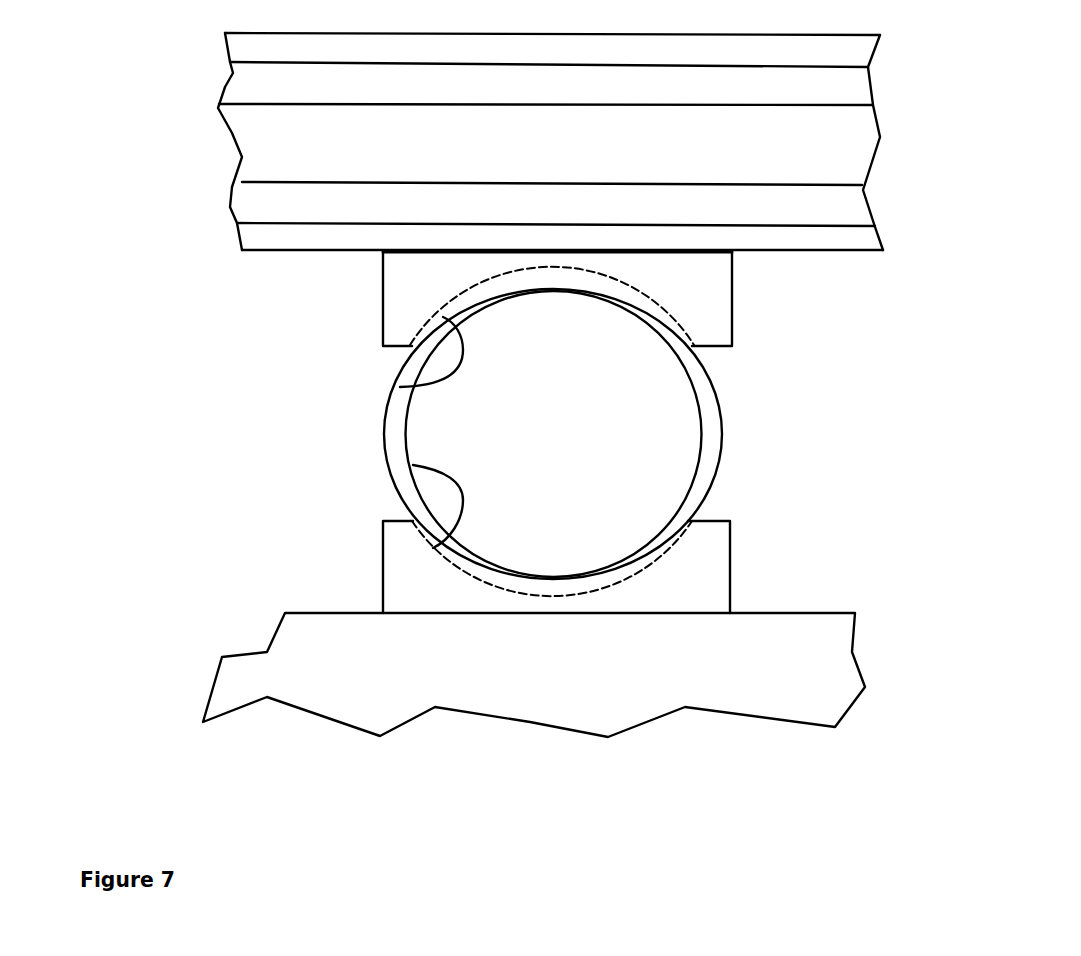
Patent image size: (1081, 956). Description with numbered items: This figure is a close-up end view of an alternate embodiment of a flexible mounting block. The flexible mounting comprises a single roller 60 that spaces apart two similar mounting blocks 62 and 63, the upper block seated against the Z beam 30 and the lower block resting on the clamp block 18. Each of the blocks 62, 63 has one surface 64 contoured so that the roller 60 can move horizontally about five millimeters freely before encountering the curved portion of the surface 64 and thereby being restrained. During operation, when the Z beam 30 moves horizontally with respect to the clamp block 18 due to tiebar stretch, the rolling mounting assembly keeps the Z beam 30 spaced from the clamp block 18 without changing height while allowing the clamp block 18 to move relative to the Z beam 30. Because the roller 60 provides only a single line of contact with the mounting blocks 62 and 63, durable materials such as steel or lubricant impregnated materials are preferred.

The Z beam 30 is at (832, 150).
The mounting block 62 is at (703, 297).
The mounting block 63 is at (710, 581).
The roller 60 is at (652, 444).
The contoured surface 64 is at (400, 387).
The clamp block 18 is at (812, 687).